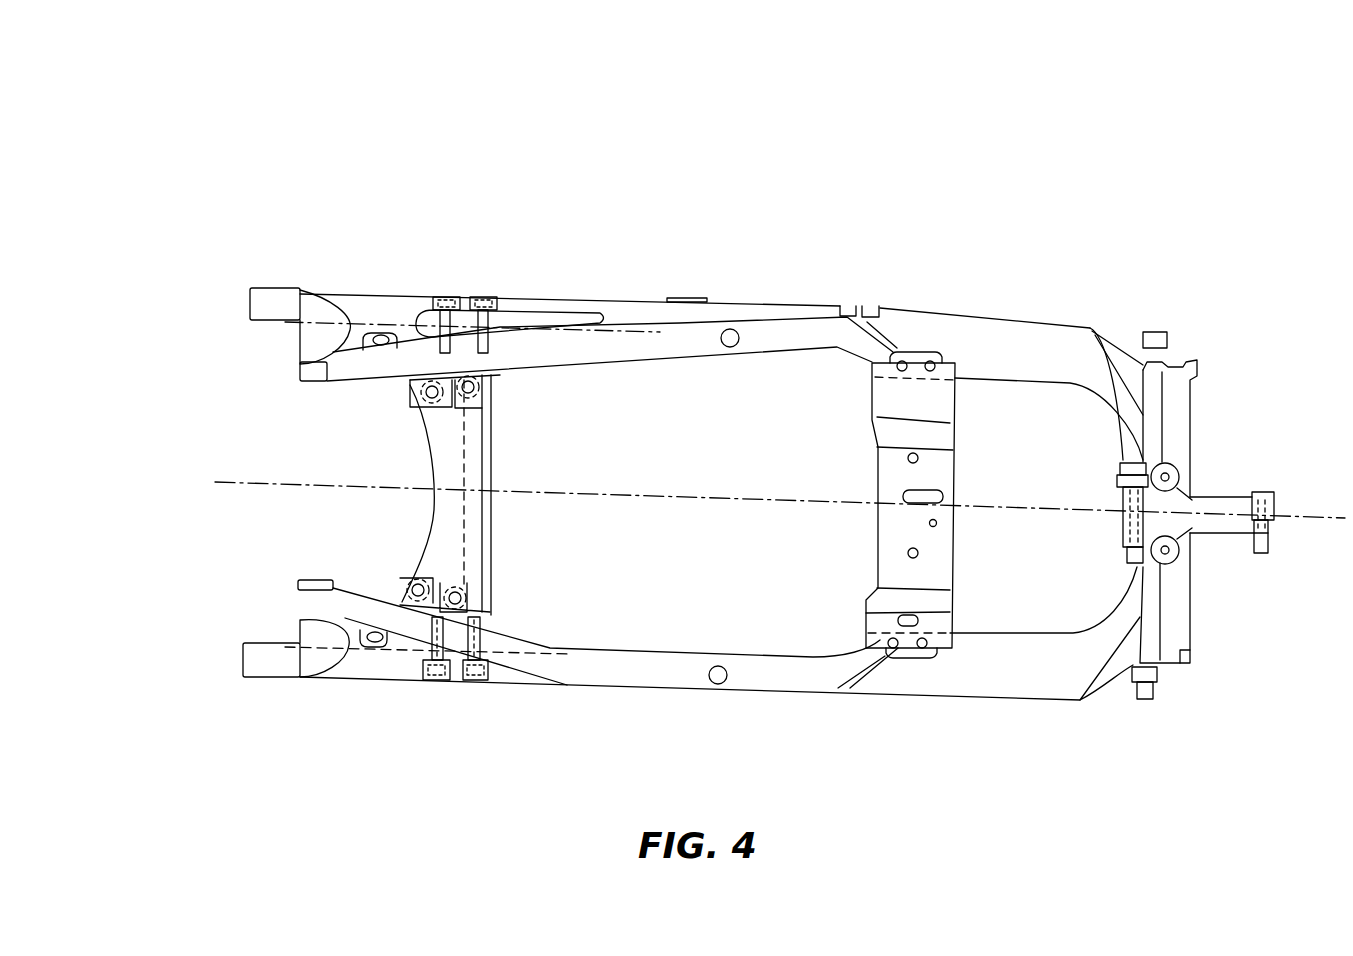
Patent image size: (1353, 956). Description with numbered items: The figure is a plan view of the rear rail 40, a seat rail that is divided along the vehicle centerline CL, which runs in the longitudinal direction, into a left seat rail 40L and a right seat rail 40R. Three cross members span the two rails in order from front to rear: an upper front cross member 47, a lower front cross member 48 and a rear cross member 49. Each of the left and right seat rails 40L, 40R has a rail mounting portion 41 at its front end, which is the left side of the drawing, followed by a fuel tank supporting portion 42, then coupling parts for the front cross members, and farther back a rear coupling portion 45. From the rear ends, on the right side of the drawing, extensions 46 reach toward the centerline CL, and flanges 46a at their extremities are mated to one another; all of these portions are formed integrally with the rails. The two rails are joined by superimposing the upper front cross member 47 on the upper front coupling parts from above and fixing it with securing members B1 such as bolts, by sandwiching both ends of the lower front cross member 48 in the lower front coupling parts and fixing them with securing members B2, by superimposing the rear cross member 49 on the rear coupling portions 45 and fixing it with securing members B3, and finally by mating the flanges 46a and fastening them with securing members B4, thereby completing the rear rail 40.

The rear rail 40 is at (229, 158).
The right seat rail 40R is at (638, 284).
The left seat rail 40L is at (616, 706).
The rail mounting portion 41 is at (298, 366).
The fuel tank supporting portion 42 is at (377, 333).
The rear coupling portion 45 is at (903, 360).
The extension 46 is at (1182, 410).
The flange 46a is at (1232, 514).
The upper front cross member 47 is at (482, 458).
The lower front cross member 48 is at (490, 540).
The rear cross member 49 is at (948, 472).
The securing member B1 is at (463, 393).
The securing member B2 is at (490, 297).
The securing member B3 is at (902, 360).
The securing member B4 is at (1127, 460).
The centerline CL is at (233, 482).